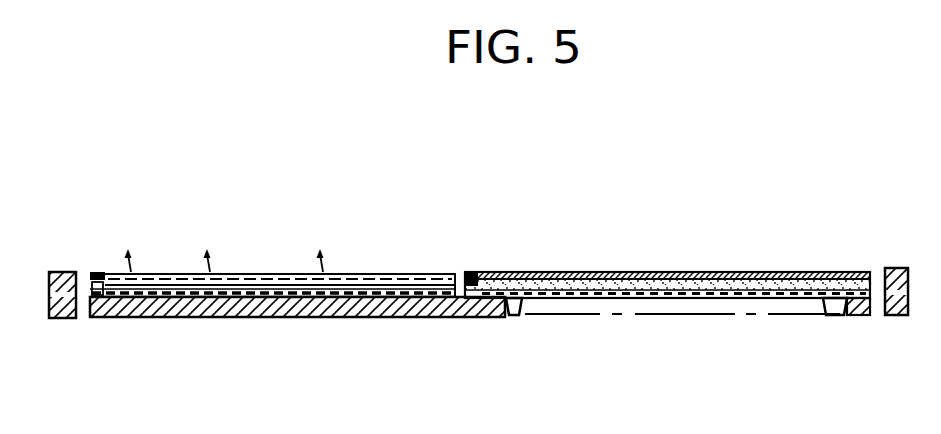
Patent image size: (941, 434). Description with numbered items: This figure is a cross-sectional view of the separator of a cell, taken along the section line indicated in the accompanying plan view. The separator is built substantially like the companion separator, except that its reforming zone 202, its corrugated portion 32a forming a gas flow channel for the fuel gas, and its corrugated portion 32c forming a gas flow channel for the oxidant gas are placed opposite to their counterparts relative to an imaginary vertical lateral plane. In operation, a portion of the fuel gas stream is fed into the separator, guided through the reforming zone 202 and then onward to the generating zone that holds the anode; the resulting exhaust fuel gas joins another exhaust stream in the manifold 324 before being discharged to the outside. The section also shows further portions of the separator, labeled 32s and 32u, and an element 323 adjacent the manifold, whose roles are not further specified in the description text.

The reforming zone 202 is at (603, 272).
The corrugated portion 32a is at (272, 272).
The base plate 32s is at (325, 308).
The upper cover plate 32u is at (763, 272).
The corrugated portion 32c is at (828, 315).
The right frame member 323 is at (875, 270).
The manifold 324 is at (85, 272).